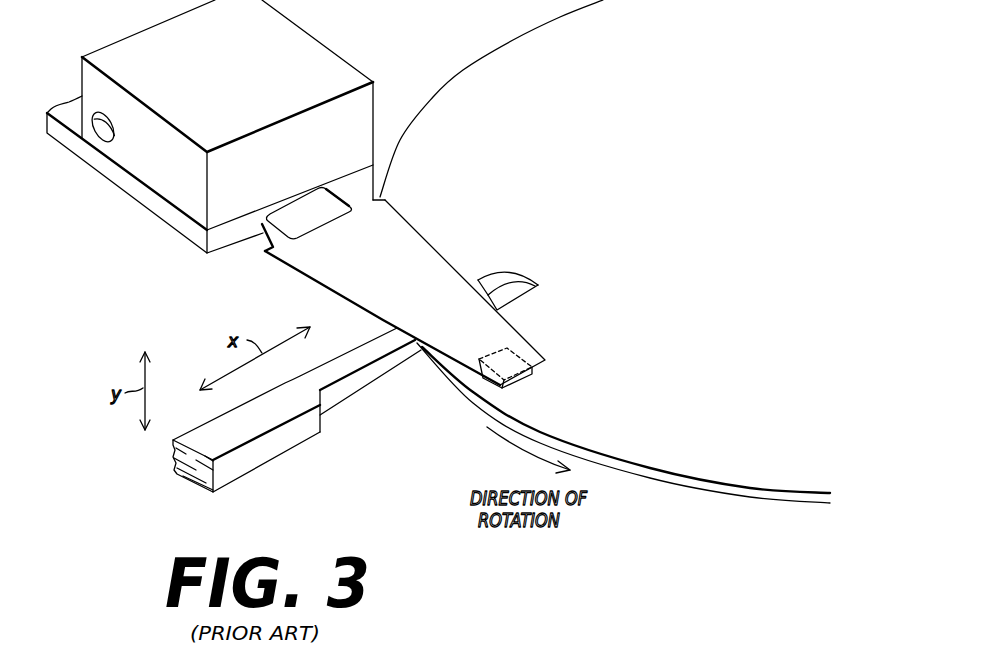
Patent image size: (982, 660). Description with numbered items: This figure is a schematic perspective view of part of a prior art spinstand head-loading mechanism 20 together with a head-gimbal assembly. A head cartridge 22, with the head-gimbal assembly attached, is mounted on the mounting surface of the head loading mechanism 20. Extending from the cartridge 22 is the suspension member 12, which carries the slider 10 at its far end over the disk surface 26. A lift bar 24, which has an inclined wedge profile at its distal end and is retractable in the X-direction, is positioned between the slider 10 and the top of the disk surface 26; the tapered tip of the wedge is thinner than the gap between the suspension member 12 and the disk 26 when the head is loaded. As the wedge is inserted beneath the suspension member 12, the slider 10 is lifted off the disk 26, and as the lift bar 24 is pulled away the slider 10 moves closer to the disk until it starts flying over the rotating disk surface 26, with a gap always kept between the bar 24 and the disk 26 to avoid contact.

The slider 10 is at (530, 382).
The suspension member 12 is at (389, 241).
The head loading mechanism 20 is at (114, 172).
The cartridge 22 is at (181, 181).
The lift bar 24 is at (509, 281).
The disk surface 26 is at (497, 89).